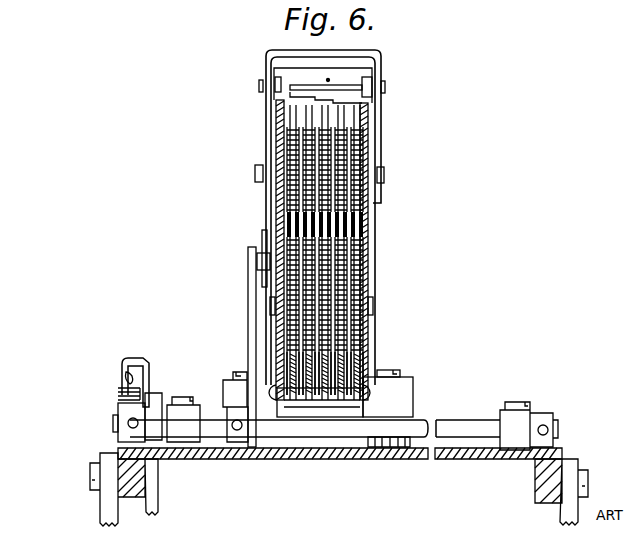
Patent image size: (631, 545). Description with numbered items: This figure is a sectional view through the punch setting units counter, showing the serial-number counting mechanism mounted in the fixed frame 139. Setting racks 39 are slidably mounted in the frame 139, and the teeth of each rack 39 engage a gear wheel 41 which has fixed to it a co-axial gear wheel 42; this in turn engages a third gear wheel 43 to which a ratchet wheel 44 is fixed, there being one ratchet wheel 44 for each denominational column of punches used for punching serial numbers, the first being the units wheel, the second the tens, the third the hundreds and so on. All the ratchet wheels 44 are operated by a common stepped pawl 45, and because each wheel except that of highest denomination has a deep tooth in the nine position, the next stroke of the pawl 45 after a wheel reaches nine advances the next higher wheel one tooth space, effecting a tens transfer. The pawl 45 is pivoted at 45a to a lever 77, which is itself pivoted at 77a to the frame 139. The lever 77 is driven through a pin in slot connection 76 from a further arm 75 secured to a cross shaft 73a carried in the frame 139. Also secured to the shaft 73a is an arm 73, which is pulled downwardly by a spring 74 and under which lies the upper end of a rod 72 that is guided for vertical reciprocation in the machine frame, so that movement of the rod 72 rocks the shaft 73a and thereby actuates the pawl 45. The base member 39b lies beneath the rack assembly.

The setting rack 39 is at (360, 367).
The base plate 39b is at (341, 399).
The gear wheel 41 is at (348, 290).
The co-axial gear wheel 42 is at (354, 245).
The third gear wheel 43 is at (364, 143).
The ratchet wheel 44 is at (362, 117).
The stepped pawl 45 is at (340, 84).
The pivot 45a is at (262, 84).
The rod 72 is at (143, 493).
The arm 73 is at (138, 364).
The cross shaft 73a is at (310, 437).
The spring 74 is at (123, 398).
The further arm 75 is at (250, 337).
The pin in slot connection 76 is at (259, 260).
The lever 77 is at (271, 122).
The pivot 77a is at (258, 175).
The fixed frame 139 is at (366, 222).